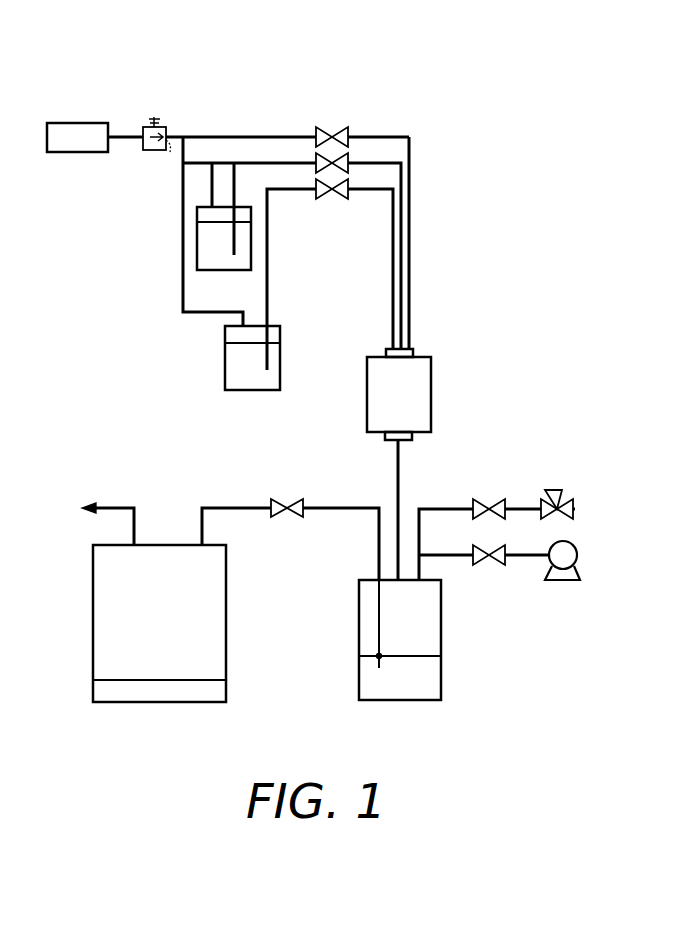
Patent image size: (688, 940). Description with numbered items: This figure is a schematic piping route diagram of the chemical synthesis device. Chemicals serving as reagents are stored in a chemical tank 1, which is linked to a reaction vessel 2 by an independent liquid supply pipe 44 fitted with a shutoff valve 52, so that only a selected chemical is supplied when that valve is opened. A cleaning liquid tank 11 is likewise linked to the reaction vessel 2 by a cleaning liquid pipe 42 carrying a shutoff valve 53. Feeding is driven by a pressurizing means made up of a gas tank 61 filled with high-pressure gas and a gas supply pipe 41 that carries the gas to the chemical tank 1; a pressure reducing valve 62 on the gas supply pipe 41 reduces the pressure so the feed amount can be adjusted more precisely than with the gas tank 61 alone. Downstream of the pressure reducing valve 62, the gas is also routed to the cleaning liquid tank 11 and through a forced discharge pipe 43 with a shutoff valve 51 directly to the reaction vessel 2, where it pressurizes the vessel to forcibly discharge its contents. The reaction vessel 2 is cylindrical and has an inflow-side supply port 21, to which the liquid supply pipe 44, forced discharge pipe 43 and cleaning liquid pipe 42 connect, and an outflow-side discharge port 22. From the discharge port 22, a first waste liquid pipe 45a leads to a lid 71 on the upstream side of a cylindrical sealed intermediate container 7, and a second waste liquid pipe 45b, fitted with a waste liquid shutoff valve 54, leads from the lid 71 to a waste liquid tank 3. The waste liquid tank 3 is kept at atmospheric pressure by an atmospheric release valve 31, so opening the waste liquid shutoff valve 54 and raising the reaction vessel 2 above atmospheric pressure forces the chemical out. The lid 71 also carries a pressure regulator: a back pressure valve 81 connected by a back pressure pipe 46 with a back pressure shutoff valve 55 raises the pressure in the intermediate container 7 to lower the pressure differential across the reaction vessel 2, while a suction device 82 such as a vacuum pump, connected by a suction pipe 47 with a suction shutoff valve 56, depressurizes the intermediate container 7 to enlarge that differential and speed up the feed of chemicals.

The chemical tank 1 is at (183, 259).
The cleaning liquid tank 11 is at (222, 358).
The reaction vessel 2 is at (433, 370).
The supply port 21 is at (416, 350).
The discharge port 22 is at (413, 438).
The waste liquid tank 3 is at (228, 648).
The atmospheric release valve 31 is at (118, 506).
The gas supply pipe 41 is at (128, 136).
The cleaning liquid pipe 42 is at (268, 272).
The forced discharge pipe 43 is at (410, 130).
The liquid supply pipe 44 is at (406, 207).
The first waste liquid pipe 45a is at (396, 472).
The second waste liquid pipe 45b is at (224, 506).
The back pressure pipe 46 is at (427, 507).
The suction pipe 47 is at (427, 554).
The shutoff valve 51 is at (328, 126).
The shutoff valve 52 is at (352, 144).
The shutoff valve 53 is at (335, 199).
The waste liquid shutoff valve 54 is at (277, 514).
The back pressure shutoff valve 55 is at (485, 500).
The suction shutoff valve 56 is at (483, 564).
The gas tank 61 is at (80, 121).
The pressure reducing valve 62 is at (146, 152).
The intermediate container 7 is at (443, 637).
The lid 71 is at (370, 578).
The back pressure valve 81 is at (552, 489).
The suction device 82 is at (557, 582).